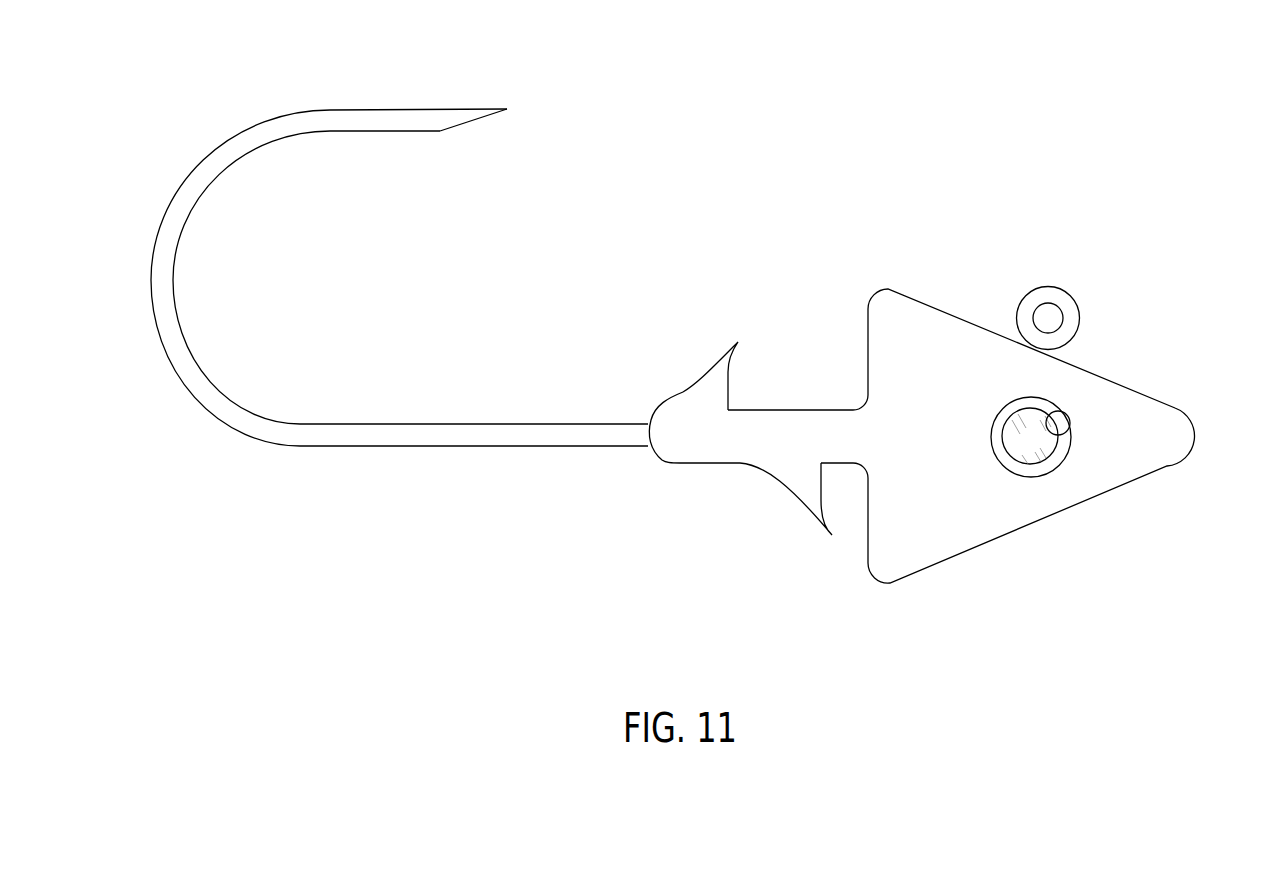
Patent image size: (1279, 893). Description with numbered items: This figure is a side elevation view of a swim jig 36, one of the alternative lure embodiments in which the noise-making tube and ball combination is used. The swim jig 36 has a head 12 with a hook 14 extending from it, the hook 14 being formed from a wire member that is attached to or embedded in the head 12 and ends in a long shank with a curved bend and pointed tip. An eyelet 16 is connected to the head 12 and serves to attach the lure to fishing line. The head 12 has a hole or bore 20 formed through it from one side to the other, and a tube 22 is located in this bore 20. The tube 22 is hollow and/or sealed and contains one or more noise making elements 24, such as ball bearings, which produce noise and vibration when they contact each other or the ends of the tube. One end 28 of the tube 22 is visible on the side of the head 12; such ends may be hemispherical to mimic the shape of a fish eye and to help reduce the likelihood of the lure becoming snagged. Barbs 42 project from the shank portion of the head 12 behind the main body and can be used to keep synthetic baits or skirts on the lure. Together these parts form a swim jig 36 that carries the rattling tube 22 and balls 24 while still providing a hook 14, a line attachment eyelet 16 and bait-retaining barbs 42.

The head 12 is at (1194, 438).
The hook 14 is at (473, 108).
The eyelet 16 is at (1077, 304).
The bore 20 is at (1062, 432).
The tube 22 is at (1010, 469).
The noise making elements 24 is at (1023, 423).
The end of the tube 28 is at (1051, 466).
The swim jig 36 is at (1160, 242).
The barbs 42 is at (708, 362).